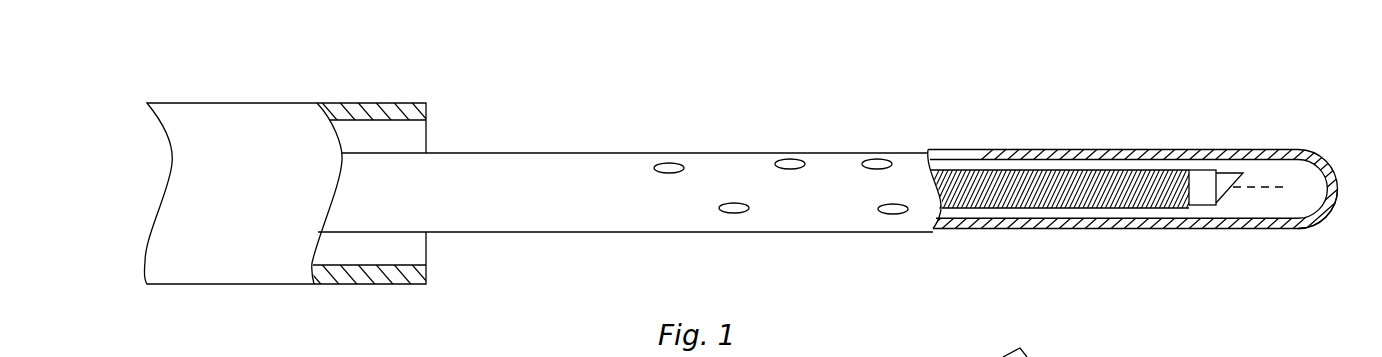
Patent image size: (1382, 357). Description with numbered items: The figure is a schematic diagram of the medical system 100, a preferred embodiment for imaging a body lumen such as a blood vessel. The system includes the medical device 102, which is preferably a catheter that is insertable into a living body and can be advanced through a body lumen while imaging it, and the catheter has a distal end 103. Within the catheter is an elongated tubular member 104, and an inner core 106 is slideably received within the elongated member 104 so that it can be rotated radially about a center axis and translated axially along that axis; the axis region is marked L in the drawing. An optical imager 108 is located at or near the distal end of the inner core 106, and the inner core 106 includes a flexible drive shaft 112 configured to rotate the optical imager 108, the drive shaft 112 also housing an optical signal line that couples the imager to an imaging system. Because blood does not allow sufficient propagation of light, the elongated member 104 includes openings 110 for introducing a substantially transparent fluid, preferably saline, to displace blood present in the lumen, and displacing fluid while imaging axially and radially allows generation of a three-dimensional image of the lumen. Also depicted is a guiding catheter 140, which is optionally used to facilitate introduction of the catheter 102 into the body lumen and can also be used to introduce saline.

The medical system 100 is at (486, 123).
The medical device 102 is at (507, 212).
The distal end 103 is at (1306, 242).
The elongated tubular member 104 is at (1085, 148).
The inner core 106 is at (1172, 170).
The optical imager 108 is at (1240, 174).
The openings 110 is at (788, 160).
The flexible drive shaft 112 is at (965, 174).
The guiding catheter 140 is at (350, 102).
The longitudinal axis L is at (1270, 178).